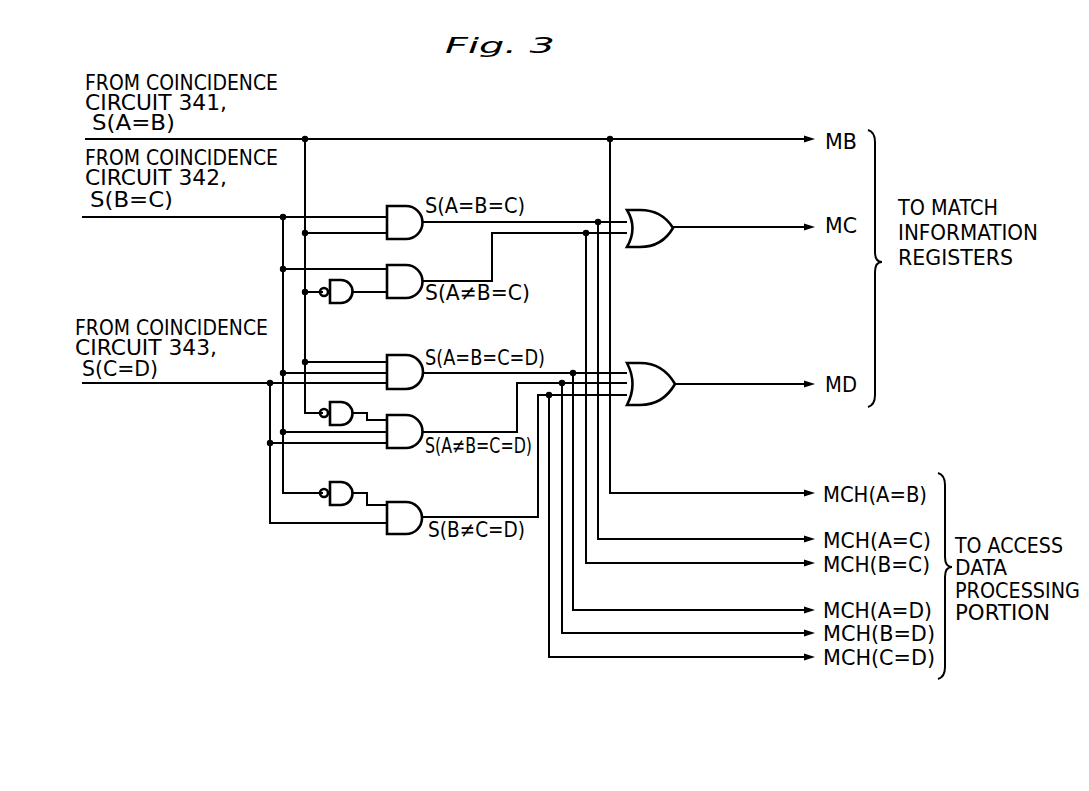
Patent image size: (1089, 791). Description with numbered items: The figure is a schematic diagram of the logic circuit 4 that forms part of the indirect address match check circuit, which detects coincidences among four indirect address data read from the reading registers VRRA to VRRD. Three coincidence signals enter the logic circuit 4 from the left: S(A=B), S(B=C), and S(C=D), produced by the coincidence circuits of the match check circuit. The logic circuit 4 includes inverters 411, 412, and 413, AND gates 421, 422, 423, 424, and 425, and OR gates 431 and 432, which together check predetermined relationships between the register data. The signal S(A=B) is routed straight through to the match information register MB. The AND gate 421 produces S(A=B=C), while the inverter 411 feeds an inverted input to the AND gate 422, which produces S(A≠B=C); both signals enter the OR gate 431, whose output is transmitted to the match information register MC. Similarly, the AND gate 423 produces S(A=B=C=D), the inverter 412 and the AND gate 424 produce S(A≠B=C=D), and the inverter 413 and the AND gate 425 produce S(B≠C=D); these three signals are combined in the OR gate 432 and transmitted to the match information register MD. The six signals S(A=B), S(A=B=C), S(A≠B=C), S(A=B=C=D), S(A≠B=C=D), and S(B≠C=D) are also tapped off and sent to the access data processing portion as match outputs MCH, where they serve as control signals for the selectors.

The logic circuit 4 is at (598, 118).
The inverter 411 is at (336, 305).
The inverter 412 is at (341, 404).
The inverter 413 is at (337, 481).
The AND gate 421 is at (401, 211).
The AND gate 422 is at (402, 269).
The AND gate 423 is at (403, 360).
The AND gate 424 is at (404, 421).
The AND gate 425 is at (402, 506).
The OR gate 431 is at (650, 216).
The OR gate 432 is at (651, 374).